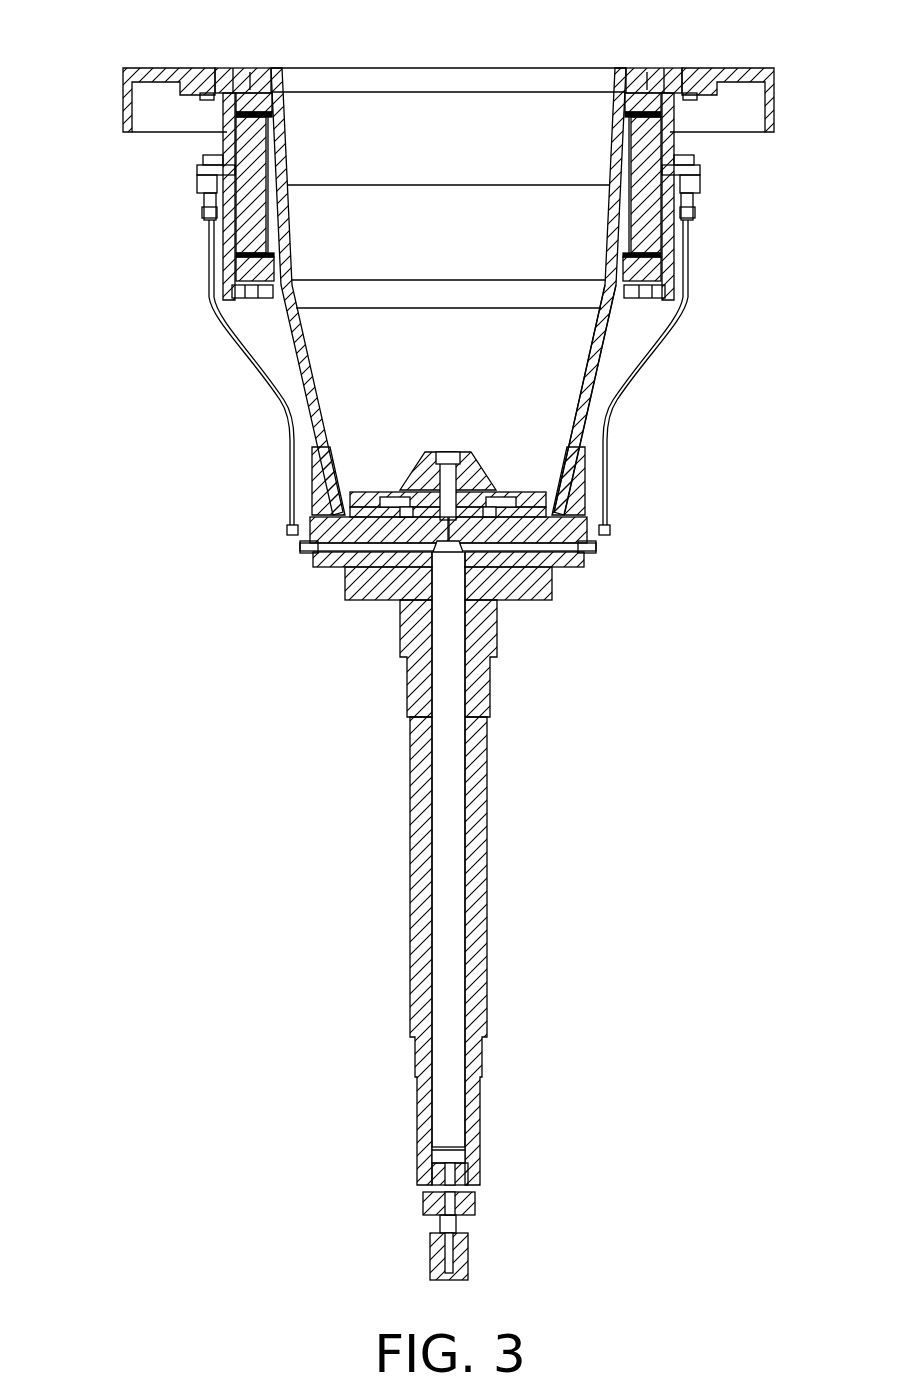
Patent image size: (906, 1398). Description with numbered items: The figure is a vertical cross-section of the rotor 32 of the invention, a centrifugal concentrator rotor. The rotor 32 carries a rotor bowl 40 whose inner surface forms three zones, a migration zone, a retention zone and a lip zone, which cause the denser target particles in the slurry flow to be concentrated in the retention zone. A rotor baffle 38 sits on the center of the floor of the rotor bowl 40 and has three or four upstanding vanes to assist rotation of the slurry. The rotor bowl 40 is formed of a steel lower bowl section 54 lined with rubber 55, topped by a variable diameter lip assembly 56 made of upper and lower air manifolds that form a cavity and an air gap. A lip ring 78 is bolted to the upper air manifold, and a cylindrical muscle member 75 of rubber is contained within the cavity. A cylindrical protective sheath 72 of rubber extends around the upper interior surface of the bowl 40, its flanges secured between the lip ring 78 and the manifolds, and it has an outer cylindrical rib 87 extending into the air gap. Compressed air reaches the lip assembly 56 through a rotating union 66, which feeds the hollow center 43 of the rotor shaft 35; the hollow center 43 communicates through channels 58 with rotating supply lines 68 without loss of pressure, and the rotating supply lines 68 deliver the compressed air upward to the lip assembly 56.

The rotor 32 is at (360, 680).
The rotor shaft 35 is at (490, 950).
The rotor baffle 38 is at (420, 470).
The rotor bowl 40 is at (605, 368).
The hollow center 43 is at (457, 1027).
The lower bowl section 54 is at (612, 318).
The rubber 55 is at (605, 342).
The variable diameter lip assembly 56 is at (223, 228).
The channels 58 is at (340, 578).
The rotating union 66 is at (470, 1250).
The rotating supply lines 68 is at (292, 470).
The cylindrical protective sheath 72 is at (337, 125).
The cylindrical muscle member 75 is at (660, 228).
The lip ring 78 is at (123, 96).
The outer cylindrical rib 87 is at (640, 180).